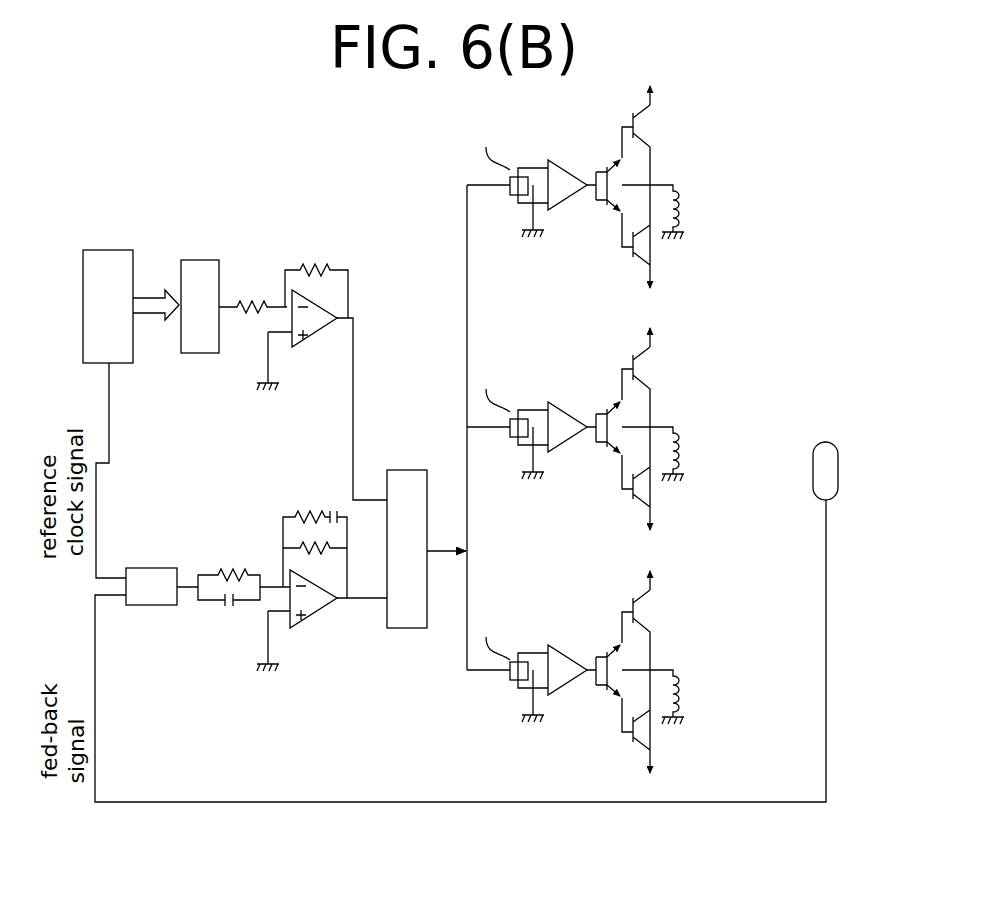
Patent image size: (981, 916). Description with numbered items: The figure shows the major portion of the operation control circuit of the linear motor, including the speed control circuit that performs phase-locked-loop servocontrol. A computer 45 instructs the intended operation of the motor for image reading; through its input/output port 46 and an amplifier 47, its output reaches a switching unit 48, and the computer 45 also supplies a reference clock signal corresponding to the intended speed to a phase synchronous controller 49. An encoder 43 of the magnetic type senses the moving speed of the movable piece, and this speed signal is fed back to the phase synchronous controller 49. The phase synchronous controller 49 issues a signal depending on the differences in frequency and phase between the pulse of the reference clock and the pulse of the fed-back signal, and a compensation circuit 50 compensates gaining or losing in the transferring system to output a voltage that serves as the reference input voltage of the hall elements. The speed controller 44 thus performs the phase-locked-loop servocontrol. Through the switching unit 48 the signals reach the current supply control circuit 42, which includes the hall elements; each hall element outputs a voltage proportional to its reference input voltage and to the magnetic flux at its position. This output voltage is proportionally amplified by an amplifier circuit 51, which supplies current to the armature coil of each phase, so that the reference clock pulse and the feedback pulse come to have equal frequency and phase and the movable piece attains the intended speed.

The current supply control circuit 42 is at (606, 424).
The encoder 43 is at (818, 470).
The speed controller 44 is at (303, 608).
The computer 45 is at (122, 250).
The input/output port 46 is at (200, 260).
The amplifier 47 is at (319, 261).
The switching unit 48 is at (410, 470).
The phase synchronous controller 49 is at (160, 568).
The compensation circuit 50 is at (269, 521).
The amplifier circuit 51 is at (581, 692).